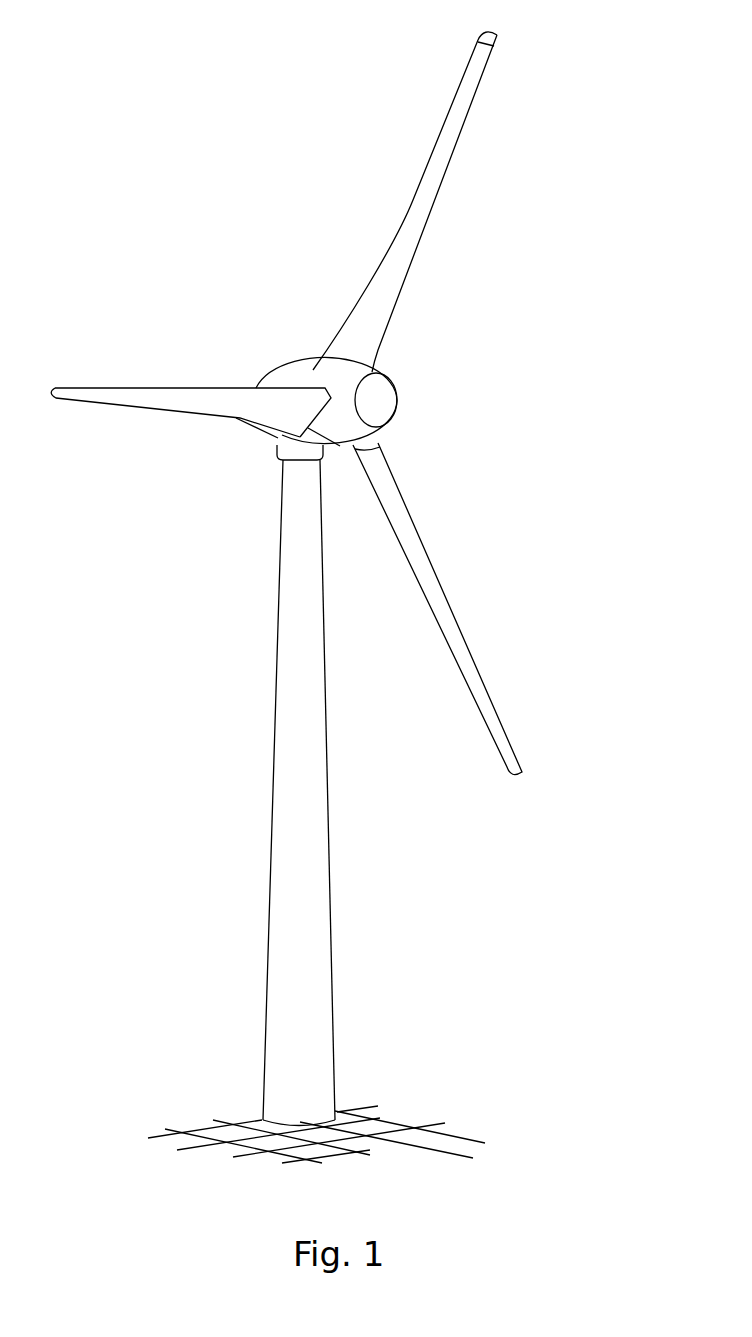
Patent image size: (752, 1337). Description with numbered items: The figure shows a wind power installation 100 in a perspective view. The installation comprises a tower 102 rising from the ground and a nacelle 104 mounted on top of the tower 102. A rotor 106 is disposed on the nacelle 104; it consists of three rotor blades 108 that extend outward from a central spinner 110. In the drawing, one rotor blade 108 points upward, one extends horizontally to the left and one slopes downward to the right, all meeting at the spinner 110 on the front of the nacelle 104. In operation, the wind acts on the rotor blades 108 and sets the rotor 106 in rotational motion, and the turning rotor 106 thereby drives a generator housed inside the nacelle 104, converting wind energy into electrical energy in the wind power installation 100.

The wind power installation 100 is at (235, 530).
The tower 102 is at (307, 893).
The nacelle 104 is at (293, 373).
The rotor 106 is at (470, 318).
The rotor blades 108 is at (437, 152).
The spinner 110 is at (383, 402).